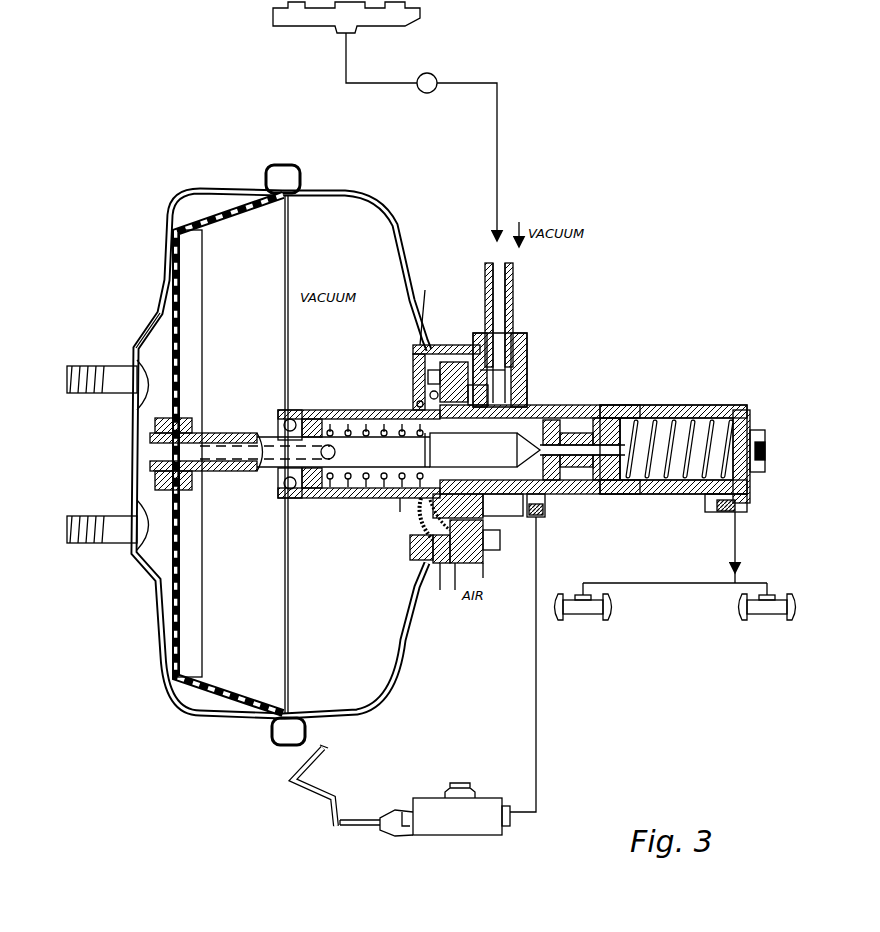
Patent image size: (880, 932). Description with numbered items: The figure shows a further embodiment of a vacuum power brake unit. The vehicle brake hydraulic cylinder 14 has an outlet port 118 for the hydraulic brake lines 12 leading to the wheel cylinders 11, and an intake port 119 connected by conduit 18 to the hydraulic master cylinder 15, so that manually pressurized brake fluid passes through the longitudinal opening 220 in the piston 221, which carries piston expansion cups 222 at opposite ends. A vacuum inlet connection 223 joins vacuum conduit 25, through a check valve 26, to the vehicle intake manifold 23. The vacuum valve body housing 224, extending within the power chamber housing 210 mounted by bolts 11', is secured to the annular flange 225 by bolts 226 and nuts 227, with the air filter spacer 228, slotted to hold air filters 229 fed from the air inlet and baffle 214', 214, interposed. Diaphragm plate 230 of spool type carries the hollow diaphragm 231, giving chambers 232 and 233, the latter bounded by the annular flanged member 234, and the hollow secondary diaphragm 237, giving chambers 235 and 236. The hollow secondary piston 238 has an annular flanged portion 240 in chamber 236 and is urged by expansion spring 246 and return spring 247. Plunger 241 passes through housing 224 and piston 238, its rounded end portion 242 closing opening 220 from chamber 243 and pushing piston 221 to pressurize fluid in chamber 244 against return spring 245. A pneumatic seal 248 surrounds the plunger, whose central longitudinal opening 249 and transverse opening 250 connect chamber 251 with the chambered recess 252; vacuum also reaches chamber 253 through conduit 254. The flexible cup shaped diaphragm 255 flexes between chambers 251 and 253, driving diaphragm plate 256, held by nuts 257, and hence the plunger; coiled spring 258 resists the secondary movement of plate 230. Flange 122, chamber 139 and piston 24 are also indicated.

The vehicle intake manifold 23 is at (408, 22).
The check valve 26 is at (424, 94).
The vacuum conduit 25 is at (500, 155).
The power chamber housing 210 is at (178, 210).
The chamber 253 is at (345, 222).
The flexible cup shaped diaphragm 255 is at (218, 210).
The diaphragm plate 256 is at (195, 282).
The chamber 251 is at (150, 320).
The mounting bolt 11' is at (86, 456).
The nuts 257 is at (152, 426).
The central longitudinal opening 249 is at (232, 472).
The plunger 241 is at (270, 470).
The transverse opening 250 is at (335, 450).
The pneumatic seal 248 is at (278, 422).
The vacuum valve body housing 224 is at (345, 500).
The chambered recess 252 is at (372, 500).
The return spring 247 is at (308, 500).
The valve piston 24 is at (409, 509).
The hollow secondary piston 238 is at (473, 450).
The rounded end portion 242 is at (538, 450).
The diaphragm plate 230 is at (425, 385).
The air filter spacer 228 is at (428, 345).
The annular flanged member 234 is at (418, 306).
The chamber 233 is at (443, 365).
The hollow diaphragm 231 is at (428, 372).
The chamber 232 is at (425, 392).
The chamber 235 is at (415, 404).
The vacuum inlet connection 223 is at (510, 295).
The conduit 254 is at (480, 355).
The chamber 236 is at (485, 392).
The annular flanged portion 240 is at (520, 395).
The housing flange 122 is at (550, 417).
The longitudinal opening 220 is at (575, 420).
The piston expansion cups 222 is at (612, 420).
The piston 221 is at (605, 495).
The vehicle brake hydraulic cylinder 14 is at (668, 410).
The return spring 245 is at (698, 425).
The chamber 244 is at (672, 495).
The outlet port 118 is at (748, 507).
The chamber 139 is at (503, 505).
The hollow secondary diaphragm 237 is at (480, 512).
The chamber 243 is at (545, 503).
The intake port 119 is at (540, 515).
The expansion spring 246 is at (500, 523).
The nuts 227 is at (498, 540).
The annular flange 225 is at (470, 560).
The bolts 226 is at (410, 548).
The coiled spring 258 is at (428, 510).
The air filters 229 is at (460, 570).
The baffle 214' is at (500, 589).
The air valve seat 214 is at (431, 607).
The hydraulic brake lines 12 is at (683, 583).
The wheel cylinder 11 is at (675, 621).
The conduit 18 is at (540, 762).
The hydraulic master cylinder 15 is at (448, 830).